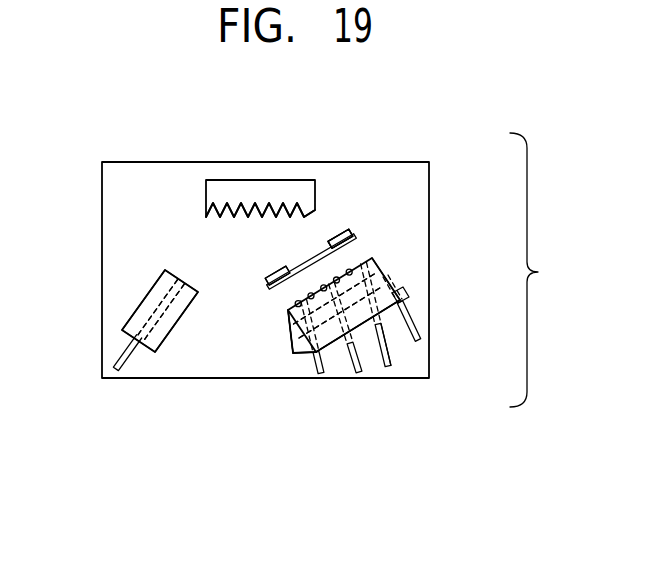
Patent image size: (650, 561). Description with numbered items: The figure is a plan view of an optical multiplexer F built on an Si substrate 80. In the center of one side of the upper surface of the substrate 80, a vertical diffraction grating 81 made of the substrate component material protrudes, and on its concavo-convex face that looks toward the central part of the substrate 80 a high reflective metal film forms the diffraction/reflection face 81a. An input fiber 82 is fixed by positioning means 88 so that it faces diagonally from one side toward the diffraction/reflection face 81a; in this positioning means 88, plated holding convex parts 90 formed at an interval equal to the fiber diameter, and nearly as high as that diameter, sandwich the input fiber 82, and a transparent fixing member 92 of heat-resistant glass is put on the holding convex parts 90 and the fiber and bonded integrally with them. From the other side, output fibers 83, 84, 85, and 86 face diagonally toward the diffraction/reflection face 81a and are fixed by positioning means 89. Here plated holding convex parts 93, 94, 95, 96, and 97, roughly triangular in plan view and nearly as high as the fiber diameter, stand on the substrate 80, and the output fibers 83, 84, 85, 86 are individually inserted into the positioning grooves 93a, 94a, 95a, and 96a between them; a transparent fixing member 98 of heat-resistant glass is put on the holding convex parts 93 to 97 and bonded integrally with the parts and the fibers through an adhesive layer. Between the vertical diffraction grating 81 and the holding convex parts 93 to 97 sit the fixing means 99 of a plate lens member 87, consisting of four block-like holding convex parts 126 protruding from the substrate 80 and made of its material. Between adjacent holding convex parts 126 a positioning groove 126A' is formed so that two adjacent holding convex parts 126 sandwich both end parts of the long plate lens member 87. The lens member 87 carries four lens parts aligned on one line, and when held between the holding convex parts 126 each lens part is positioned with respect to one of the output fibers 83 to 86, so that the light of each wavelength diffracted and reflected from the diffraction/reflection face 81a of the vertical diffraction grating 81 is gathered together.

The Si substrate 80 is at (430, 178).
The vertical diffraction grating 81 is at (246, 190).
The diffraction/reflection face 81a is at (300, 213).
The plate lens member 87 is at (318, 252).
The fixing means of the lens member 99 is at (342, 230).
The holding convex parts 126 is at (355, 240).
The positioning groove 126A' is at (223, 259).
The transparent fixing member 98 is at (371, 258).
The positioning groove 95a is at (381, 272).
The positioning groove 96a is at (386, 286).
The holding convex part 97 is at (407, 296).
The output fiber 86 is at (410, 323).
The holding convex part 96 is at (394, 344).
The output fiber 85 is at (418, 355).
The output fiber 83 is at (333, 373).
The output fiber 84 is at (363, 373).
The holding convex part 93 is at (312, 370).
The positioning groove 93a is at (287, 312).
The holding convex part 94 is at (352, 373).
The positioning groove 94a is at (292, 353).
The holding convex part 95 is at (395, 367).
The positioning means 88 is at (172, 340).
The positioning means 89 is at (288, 332).
The holding convex parts 90 is at (156, 284).
The transparent fixing member 92 is at (140, 305).
The input fiber 82 is at (119, 370).
The optical multiplexer F is at (532, 270).